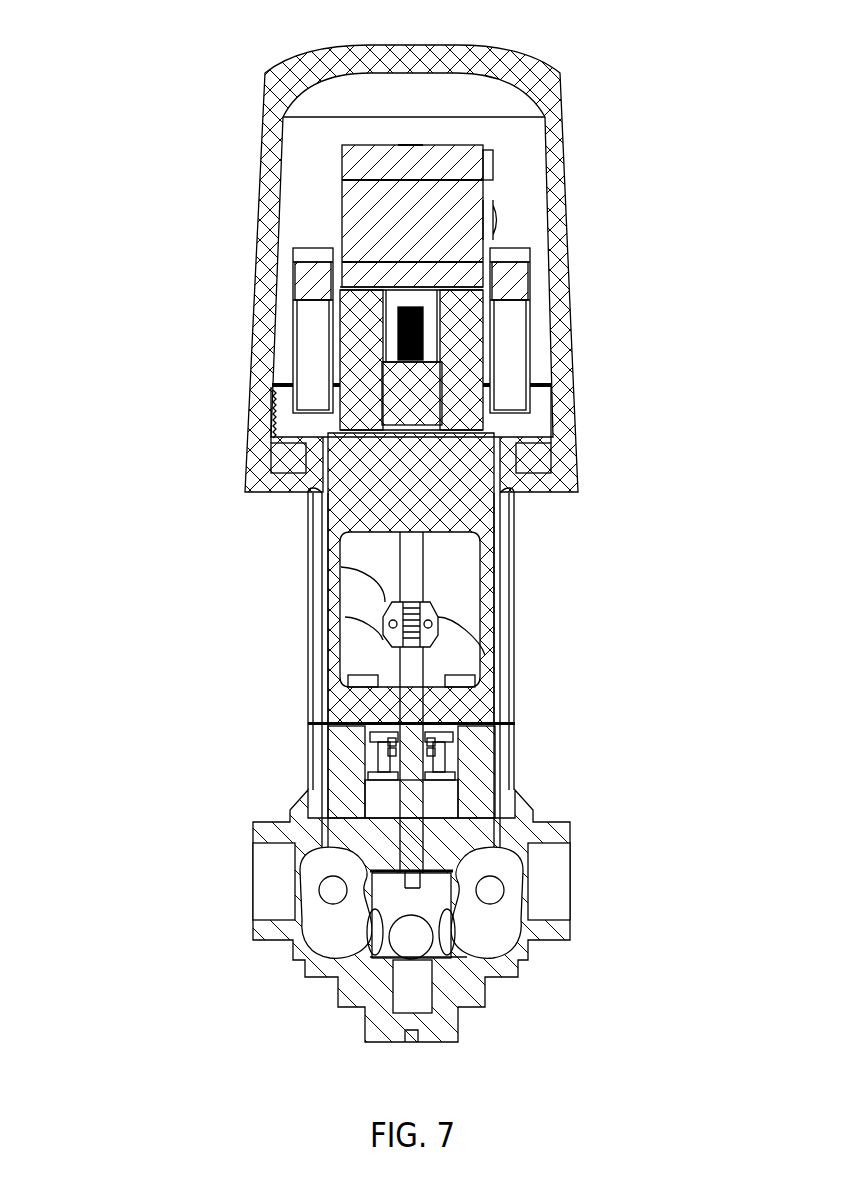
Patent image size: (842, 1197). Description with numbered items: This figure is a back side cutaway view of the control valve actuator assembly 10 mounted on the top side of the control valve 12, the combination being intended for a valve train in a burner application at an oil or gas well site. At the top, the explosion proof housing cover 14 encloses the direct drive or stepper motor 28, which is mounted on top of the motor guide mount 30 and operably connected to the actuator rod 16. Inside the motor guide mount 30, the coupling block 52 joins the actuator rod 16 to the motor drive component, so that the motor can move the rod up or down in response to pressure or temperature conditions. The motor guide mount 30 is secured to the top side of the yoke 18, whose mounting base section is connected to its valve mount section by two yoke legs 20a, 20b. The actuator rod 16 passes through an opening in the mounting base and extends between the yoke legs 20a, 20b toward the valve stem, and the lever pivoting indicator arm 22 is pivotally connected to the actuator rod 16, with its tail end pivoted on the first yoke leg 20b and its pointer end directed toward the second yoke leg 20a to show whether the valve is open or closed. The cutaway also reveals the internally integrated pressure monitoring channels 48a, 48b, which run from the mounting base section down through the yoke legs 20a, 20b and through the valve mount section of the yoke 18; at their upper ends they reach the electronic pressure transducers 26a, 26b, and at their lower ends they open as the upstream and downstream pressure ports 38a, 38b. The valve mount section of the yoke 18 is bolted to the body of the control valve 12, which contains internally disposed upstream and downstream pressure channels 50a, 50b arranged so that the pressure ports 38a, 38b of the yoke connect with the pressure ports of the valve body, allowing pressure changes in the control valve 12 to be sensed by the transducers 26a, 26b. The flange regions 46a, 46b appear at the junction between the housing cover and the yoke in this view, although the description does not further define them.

The control valve actuator assembly 10 is at (700, 41).
The control valve 12 is at (699, 725).
The explosion proof housing cover 14 is at (565, 153).
The actuator rod 16 is at (417, 580).
The yoke 18 is at (462, 512).
The second yoke leg 20a is at (505, 600).
The first yoke leg 20b is at (325, 598).
The lever pivoting indicator arm 22 is at (388, 602).
The pressure transducer 26a is at (515, 340).
The pressure transducer 26b is at (313, 338).
The stepper motor 28 is at (458, 200).
The motor guide mount 30 is at (467, 325).
The upstream pressure port 38a is at (508, 716).
The downstream pressure port 38b is at (312, 699).
The flange 46a is at (548, 443).
The flange 46b is at (285, 498).
The pressure monitoring channel 48a is at (497, 638).
The pressure monitoring channel 48b is at (318, 647).
The upstream pressure channel 50a is at (500, 757).
The downstream pressure channel 50b is at (322, 760).
The coupling block 52 is at (400, 396).